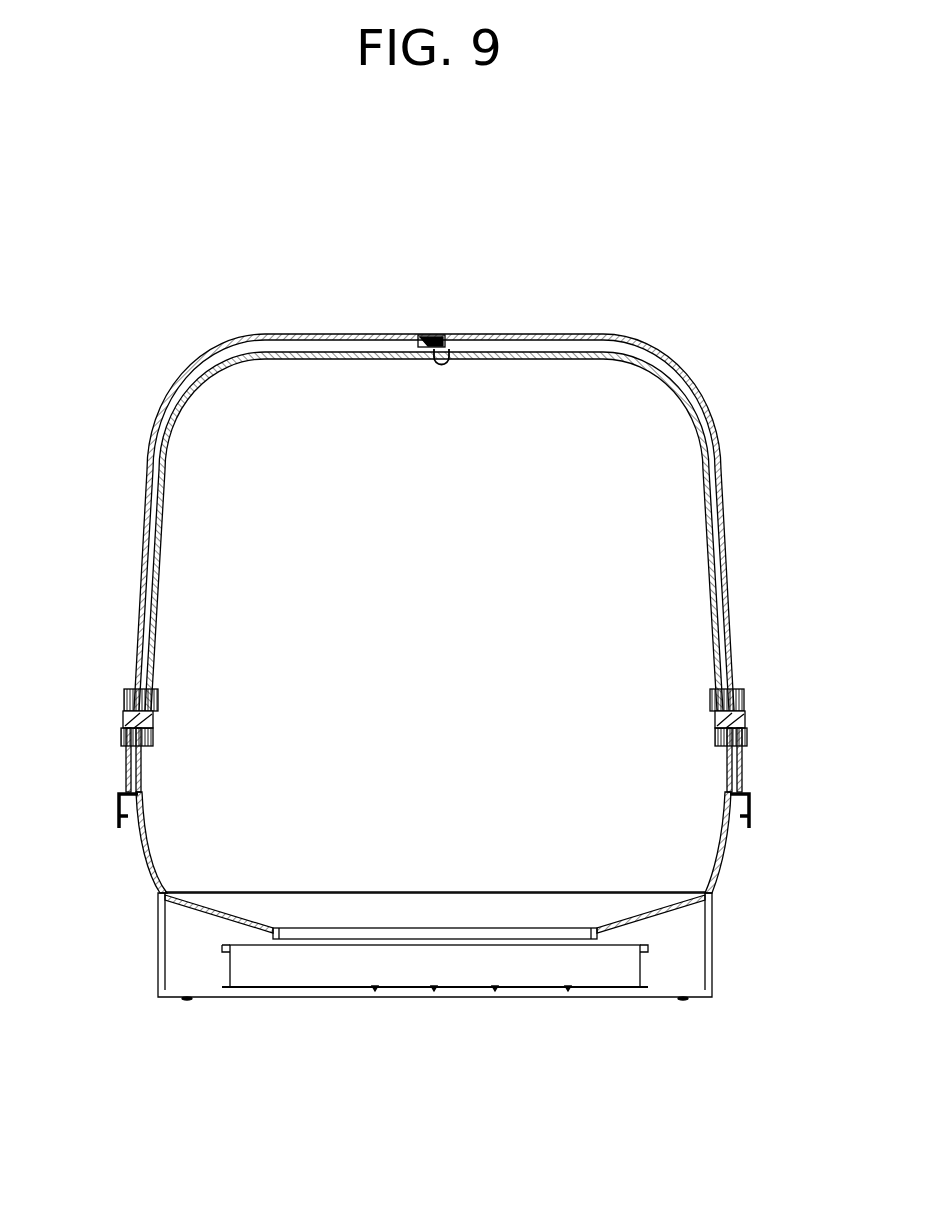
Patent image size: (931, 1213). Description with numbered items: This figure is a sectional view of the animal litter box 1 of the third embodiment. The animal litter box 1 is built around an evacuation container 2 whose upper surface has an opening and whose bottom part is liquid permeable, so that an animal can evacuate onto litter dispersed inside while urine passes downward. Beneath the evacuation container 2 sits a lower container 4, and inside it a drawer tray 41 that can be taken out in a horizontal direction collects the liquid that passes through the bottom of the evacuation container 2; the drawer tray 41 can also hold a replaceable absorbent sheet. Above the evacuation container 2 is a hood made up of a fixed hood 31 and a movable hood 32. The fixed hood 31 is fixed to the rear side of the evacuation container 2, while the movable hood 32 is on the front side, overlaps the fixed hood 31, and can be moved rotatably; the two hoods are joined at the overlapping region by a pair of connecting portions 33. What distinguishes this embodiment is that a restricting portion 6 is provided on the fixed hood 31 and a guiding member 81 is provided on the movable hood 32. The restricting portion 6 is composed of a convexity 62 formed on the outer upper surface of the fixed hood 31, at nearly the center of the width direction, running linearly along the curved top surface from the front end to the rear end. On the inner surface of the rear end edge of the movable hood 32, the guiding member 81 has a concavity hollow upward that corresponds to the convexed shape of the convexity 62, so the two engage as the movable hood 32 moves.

The animal litter box 1 is at (214, 232).
The evacuation container 2 is at (714, 867).
The fixed hood 31 is at (237, 360).
The movable hood 32 is at (361, 334).
The connecting portions 33 is at (123, 722).
The lower container 4 is at (475, 973).
The drawer tray 41 is at (648, 960).
The restricting portion 6 is at (501, 319).
The convexity 62 is at (449, 360).
The guiding member 81 is at (413, 335).